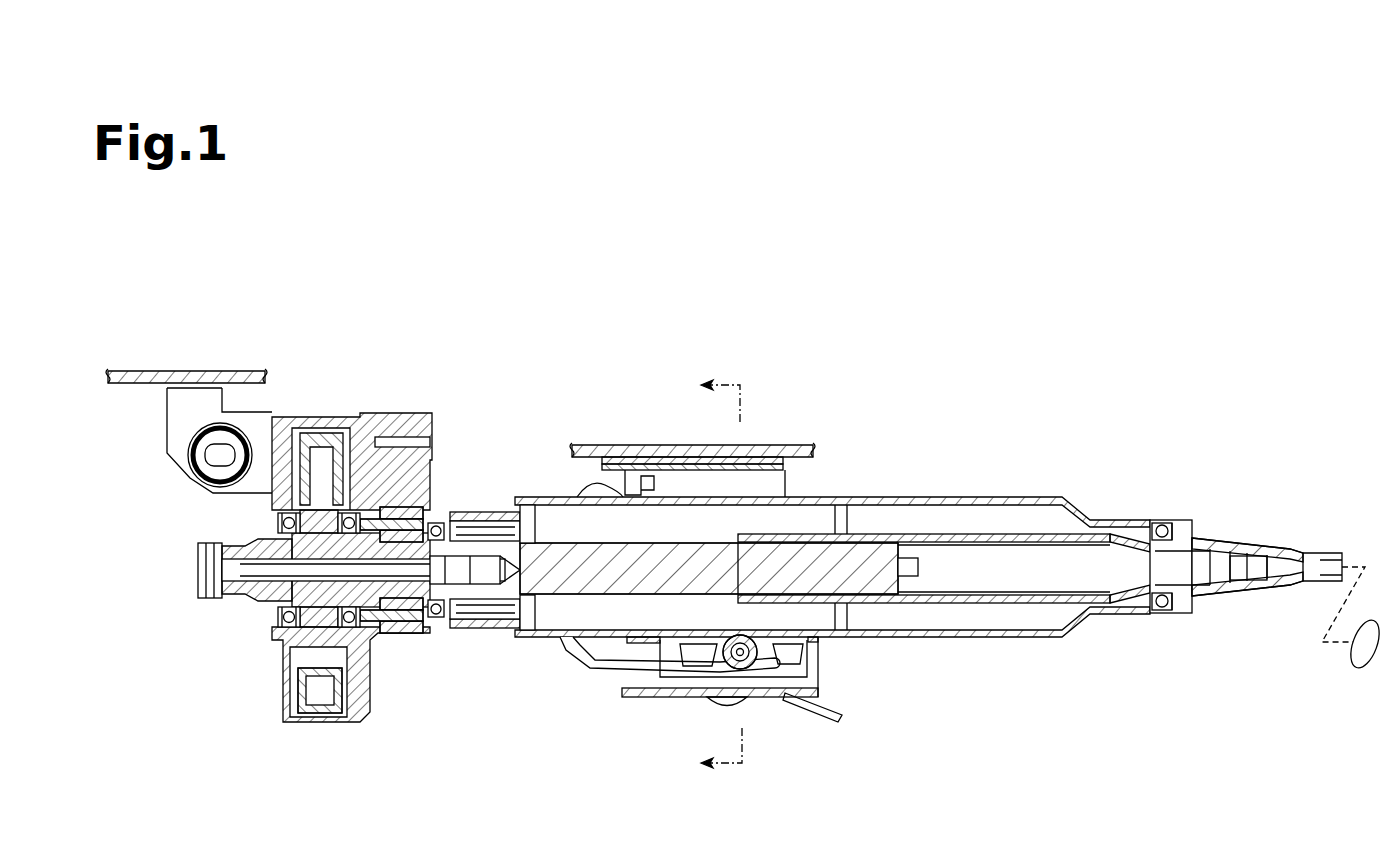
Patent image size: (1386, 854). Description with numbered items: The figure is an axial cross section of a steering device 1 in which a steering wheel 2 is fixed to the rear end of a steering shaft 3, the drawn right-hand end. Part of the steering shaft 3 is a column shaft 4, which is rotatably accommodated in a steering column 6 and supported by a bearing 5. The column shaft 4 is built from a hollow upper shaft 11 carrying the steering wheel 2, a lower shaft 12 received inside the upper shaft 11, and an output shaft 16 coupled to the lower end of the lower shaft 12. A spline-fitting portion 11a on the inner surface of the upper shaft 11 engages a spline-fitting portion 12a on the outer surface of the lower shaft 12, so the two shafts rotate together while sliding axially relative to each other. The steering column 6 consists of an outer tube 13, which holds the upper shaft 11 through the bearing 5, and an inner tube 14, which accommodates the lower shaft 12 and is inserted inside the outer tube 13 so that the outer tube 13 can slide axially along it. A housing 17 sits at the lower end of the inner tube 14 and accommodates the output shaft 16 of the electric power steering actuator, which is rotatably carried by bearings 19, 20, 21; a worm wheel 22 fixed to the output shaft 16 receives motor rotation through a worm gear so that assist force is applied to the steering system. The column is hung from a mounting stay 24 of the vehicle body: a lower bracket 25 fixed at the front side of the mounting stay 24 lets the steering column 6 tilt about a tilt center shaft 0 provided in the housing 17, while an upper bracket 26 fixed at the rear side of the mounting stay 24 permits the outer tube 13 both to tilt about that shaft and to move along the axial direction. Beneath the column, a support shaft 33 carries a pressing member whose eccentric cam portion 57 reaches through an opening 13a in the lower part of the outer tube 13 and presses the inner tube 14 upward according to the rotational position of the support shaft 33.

The steering device 1 is at (1205, 305).
The steering wheel 2 is at (1359, 688).
The steering shaft 3 is at (1248, 524).
The column shaft 4 is at (1210, 535).
The bearing 5 is at (1157, 520).
The steering column 6 is at (1020, 480).
The upper shaft 11 is at (984, 597).
The spline-fitting portion 11a is at (900, 573).
The lower shaft 12 is at (750, 610).
The spline-fitting portion 12a is at (820, 526).
The outer tube 13 is at (920, 497).
The opening 13a is at (807, 643).
The inner tube 14 is at (837, 480).
The output shaft 16 is at (458, 523).
The housing 17 is at (405, 422).
The bearing 19 is at (435, 632).
The bearing 20 is at (390, 633).
The bearing 21 is at (283, 632).
The worm wheel 22 is at (302, 728).
The mounting stay 24 is at (223, 370).
The lower bracket 25 is at (191, 448).
The upper bracket 26 is at (758, 447).
The support shaft 33 is at (725, 670).
The cam portion 57 is at (733, 637).
The tilt center shaft 0 is at (200, 477).